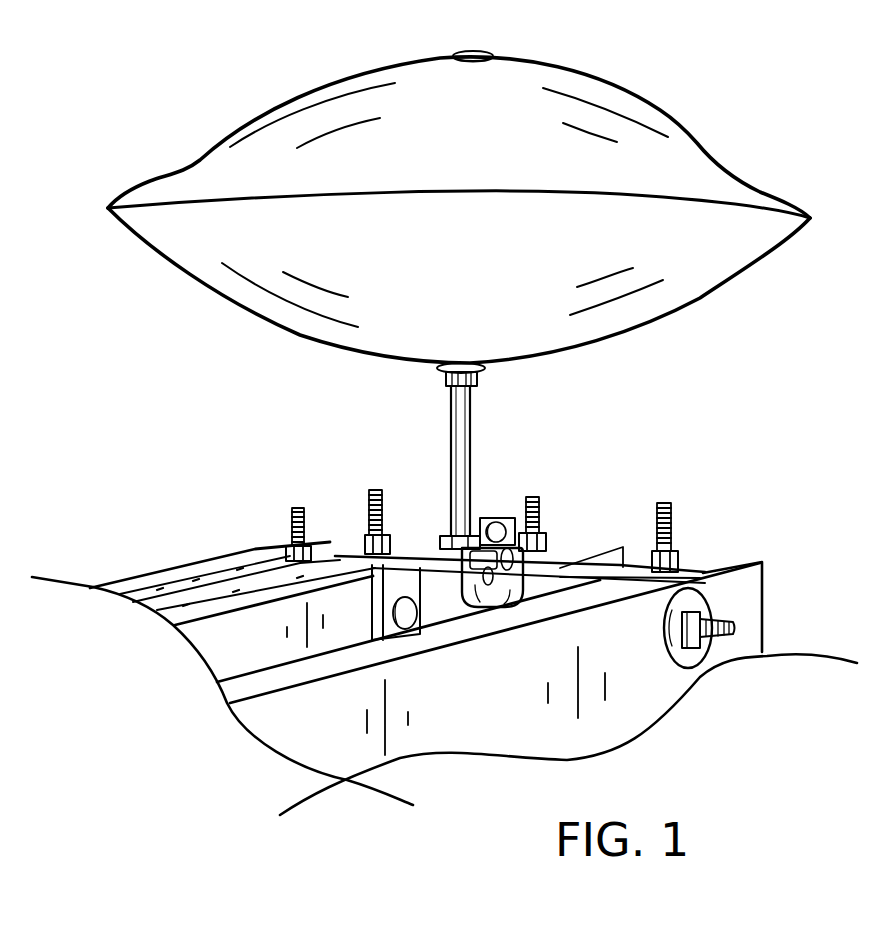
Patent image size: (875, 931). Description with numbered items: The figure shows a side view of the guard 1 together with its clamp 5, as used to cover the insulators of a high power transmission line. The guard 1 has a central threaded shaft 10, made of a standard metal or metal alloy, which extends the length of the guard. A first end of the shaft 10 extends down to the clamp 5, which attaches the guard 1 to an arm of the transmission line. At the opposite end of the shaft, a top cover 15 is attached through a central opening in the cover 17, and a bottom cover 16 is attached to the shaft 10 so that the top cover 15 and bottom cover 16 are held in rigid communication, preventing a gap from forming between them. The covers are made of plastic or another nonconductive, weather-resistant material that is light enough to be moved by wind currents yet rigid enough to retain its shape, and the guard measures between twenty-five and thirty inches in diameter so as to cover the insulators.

The guard 1 is at (712, 84).
The top cover 15 is at (697, 143).
The bottom cover 16 is at (653, 323).
The central opening in the cover 17 is at (493, 367).
The central threaded shaft 10 is at (472, 467).
The clamp 5 is at (688, 567).